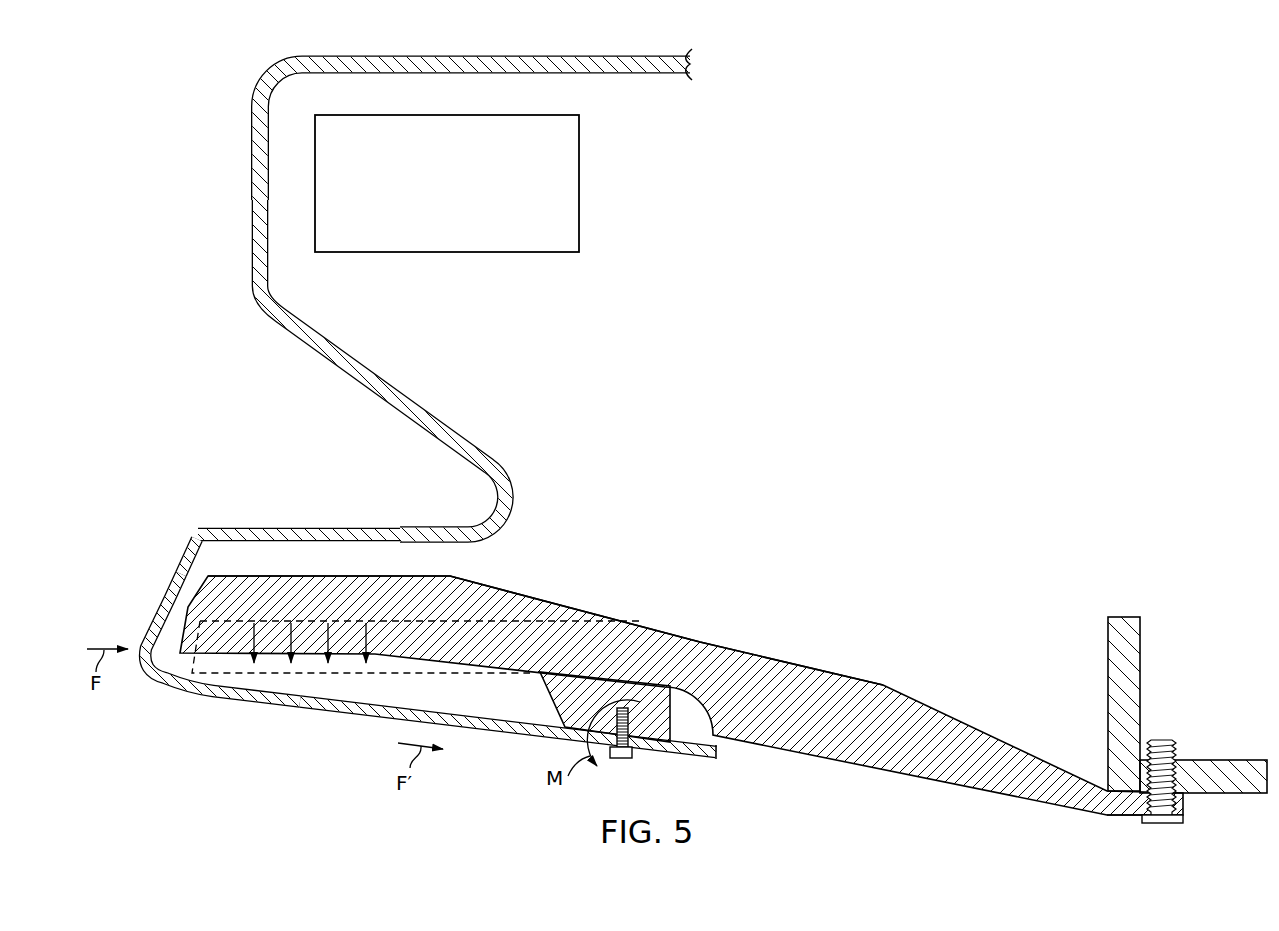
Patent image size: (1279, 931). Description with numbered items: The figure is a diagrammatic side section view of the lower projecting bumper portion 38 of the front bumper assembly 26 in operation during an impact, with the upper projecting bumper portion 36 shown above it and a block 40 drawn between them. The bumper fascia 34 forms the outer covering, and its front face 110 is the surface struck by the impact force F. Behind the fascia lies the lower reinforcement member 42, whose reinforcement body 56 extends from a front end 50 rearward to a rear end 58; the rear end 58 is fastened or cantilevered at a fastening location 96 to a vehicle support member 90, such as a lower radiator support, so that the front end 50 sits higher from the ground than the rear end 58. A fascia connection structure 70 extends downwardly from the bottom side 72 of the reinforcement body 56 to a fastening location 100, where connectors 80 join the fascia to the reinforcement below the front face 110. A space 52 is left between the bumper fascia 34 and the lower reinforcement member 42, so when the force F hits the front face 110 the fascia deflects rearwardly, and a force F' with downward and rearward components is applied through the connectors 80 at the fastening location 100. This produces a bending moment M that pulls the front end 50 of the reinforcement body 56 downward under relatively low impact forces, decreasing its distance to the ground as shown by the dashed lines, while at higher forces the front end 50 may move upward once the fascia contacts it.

The front bumper assembly 26 is at (186, 242).
The upper projecting bumper portion 36 is at (243, 167).
The lower projecting bumper portion 38 is at (201, 465).
The battery / device body 40 is at (579, 215).
The lower reinforcement member 42 is at (546, 545).
The space 52 is at (202, 573).
The bumper fascia 34 is at (190, 540).
The front face 110 is at (148, 610).
The front end 50 is at (182, 648).
The reinforcement body 56 is at (567, 605).
The fascia connection structure 70 is at (627, 653).
The bottom side 72 is at (490, 670).
The connectors 80 is at (517, 738).
The fastening location 100 is at (618, 762).
The vehicle support member 90 is at (1135, 672).
The fastening location 96 is at (1175, 742).
The rear end 58 is at (1117, 817).